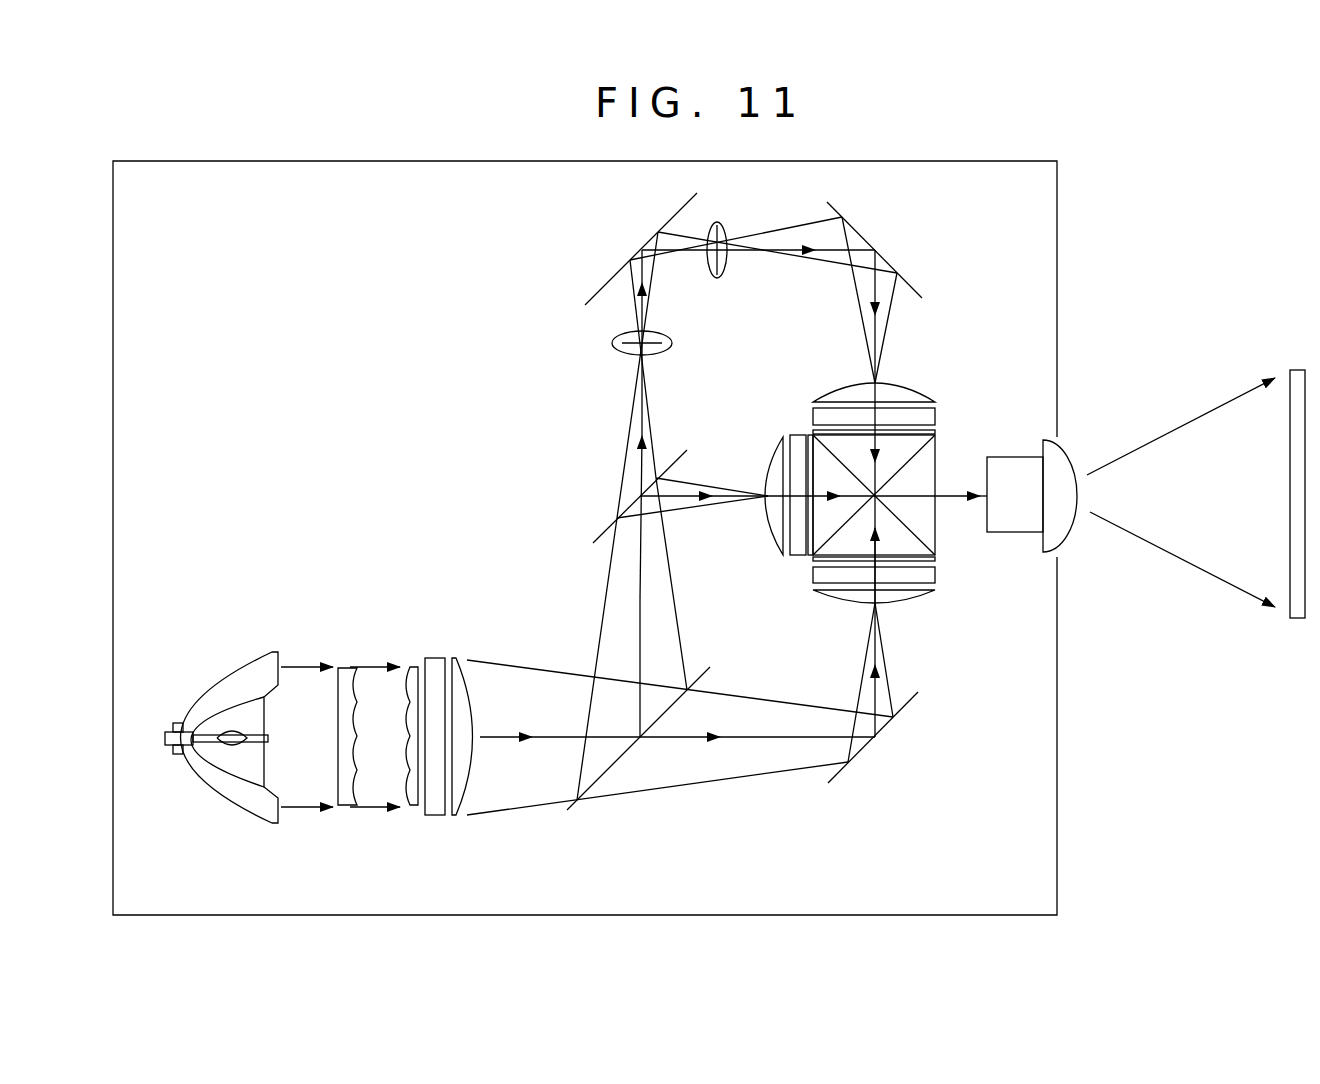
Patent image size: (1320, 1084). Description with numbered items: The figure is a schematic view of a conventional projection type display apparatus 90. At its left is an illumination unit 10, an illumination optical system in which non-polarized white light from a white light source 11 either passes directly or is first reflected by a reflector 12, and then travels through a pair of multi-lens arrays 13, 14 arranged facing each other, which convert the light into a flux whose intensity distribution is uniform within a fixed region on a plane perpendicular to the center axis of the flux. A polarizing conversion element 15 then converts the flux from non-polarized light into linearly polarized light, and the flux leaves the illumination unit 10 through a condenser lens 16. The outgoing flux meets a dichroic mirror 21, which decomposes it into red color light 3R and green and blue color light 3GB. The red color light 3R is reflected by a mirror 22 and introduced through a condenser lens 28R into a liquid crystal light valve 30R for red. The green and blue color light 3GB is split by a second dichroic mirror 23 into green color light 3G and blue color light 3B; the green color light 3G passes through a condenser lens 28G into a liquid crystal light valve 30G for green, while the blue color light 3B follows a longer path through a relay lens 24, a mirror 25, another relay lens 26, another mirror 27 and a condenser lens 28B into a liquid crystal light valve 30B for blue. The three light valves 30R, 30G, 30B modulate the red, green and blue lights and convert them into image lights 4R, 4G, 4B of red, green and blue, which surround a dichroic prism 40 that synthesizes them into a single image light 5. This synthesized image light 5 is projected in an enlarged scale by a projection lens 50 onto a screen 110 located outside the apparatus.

The illumination unit 10 is at (483, 602).
The white light source 11 is at (232, 748).
The reflector 12 is at (188, 770).
The multi-lens array 13 is at (350, 807).
The multi-lens array 14 is at (407, 810).
The polarizing conversion element 15 is at (432, 817).
The condenser lens 16 is at (457, 817).
The dichroic mirror 21 is at (597, 782).
The mirror 22 is at (837, 773).
The dichroic mirror 23 is at (602, 535).
The relay lens 24 is at (612, 343).
The mirror 25 is at (598, 290).
The relay lens 26 is at (717, 278).
The mirror 27 is at (903, 281).
The condenser lens 28R is at (920, 601).
The condenser lens 28G is at (770, 460).
The condenser lens 28B is at (830, 397).
The liquid crystal light valve for red 30R is at (937, 578).
The liquid crystal light valve for green 30G is at (798, 557).
The liquid crystal light valve for blue 30B is at (935, 408).
The image light of red 4R is at (880, 561).
The image light of green 4G is at (815, 560).
The image light of blue 4B is at (880, 436).
The dichroic prism 40 is at (930, 532).
The image light 5 is at (957, 490).
The projection lens 50 is at (1067, 458).
The projection type display apparatus 90 is at (1058, 698).
The screen 110 is at (1293, 620).
The red color light 3R is at (723, 782).
The green color light 3G is at (700, 513).
The blue color light 3B is at (625, 445).
The green and blue color light 3GB is at (607, 582).